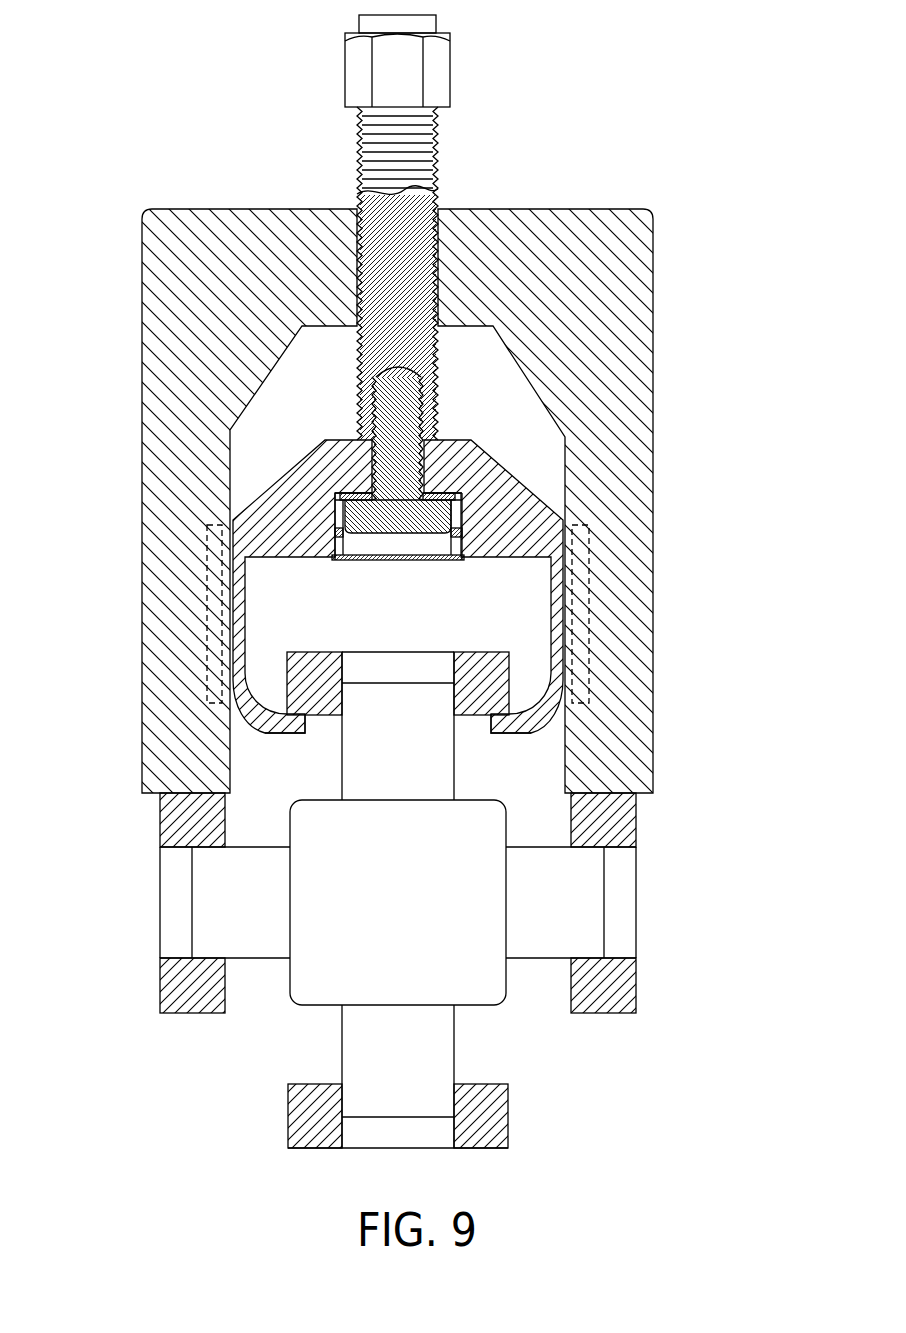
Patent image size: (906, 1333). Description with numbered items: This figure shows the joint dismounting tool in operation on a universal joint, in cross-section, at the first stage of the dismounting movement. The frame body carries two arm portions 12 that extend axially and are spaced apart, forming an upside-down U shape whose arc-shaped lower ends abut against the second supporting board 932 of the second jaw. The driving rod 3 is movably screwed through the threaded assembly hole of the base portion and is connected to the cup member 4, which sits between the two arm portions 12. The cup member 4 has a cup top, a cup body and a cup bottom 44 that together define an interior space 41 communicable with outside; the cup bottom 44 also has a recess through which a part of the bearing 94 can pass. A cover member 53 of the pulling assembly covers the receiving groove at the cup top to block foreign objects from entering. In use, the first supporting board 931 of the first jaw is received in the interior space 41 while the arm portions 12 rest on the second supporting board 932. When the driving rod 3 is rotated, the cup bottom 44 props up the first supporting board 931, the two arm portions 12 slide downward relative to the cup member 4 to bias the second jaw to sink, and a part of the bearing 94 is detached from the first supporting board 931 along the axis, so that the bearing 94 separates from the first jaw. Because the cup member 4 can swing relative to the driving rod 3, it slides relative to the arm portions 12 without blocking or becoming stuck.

The driving rod 3 is at (423, 162).
The cup member 4 is at (290, 487).
The interior space 41 is at (291, 594).
The cup bottom 44 is at (507, 733).
The cover member 53 is at (410, 560).
The arm portions 12 is at (625, 634).
The first supporting board 931 is at (493, 678).
The second supporting board 932 is at (622, 828).
The bearing 94 is at (477, 972).